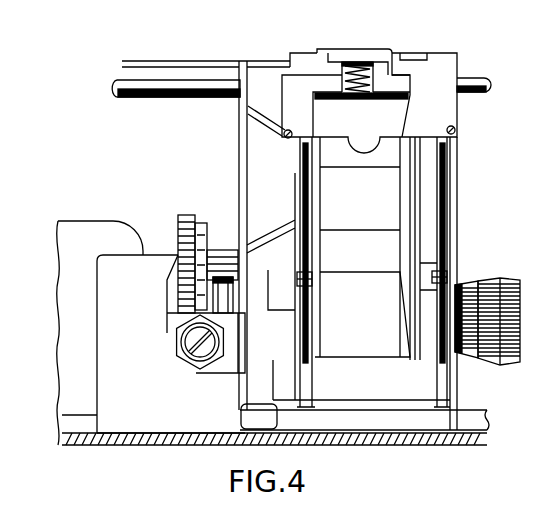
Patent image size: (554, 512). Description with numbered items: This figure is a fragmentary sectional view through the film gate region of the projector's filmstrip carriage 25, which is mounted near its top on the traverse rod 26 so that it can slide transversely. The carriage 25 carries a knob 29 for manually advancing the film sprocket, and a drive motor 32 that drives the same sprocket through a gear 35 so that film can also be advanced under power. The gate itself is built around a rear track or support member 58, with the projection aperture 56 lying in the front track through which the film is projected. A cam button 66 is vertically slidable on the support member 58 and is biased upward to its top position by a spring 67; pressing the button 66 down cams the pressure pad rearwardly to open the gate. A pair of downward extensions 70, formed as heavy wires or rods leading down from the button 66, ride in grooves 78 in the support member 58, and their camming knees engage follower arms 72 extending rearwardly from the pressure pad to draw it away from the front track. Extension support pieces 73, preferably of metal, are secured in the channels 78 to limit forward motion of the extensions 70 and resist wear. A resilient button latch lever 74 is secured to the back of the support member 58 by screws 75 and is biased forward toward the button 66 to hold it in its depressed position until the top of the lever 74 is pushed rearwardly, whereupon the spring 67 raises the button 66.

The filmstrip carriage 25 is at (468, 52).
The traverse rod 26 is at (157, 97).
The knob 29 is at (516, 363).
The drive motor 32 is at (97, 227).
The gear 35 is at (190, 215).
The projection aperture 56 is at (352, 237).
The support member 58 is at (380, 394).
The cam button 66 is at (392, 52).
The spring 67 is at (366, 93).
The downward extensions 70 is at (440, 336).
The follower arms 72 is at (303, 278).
The extension support pieces 73 is at (305, 381).
The button latch lever 74 is at (446, 99).
The screws 75 is at (298, 121).
The grooves 78 is at (350, 336).